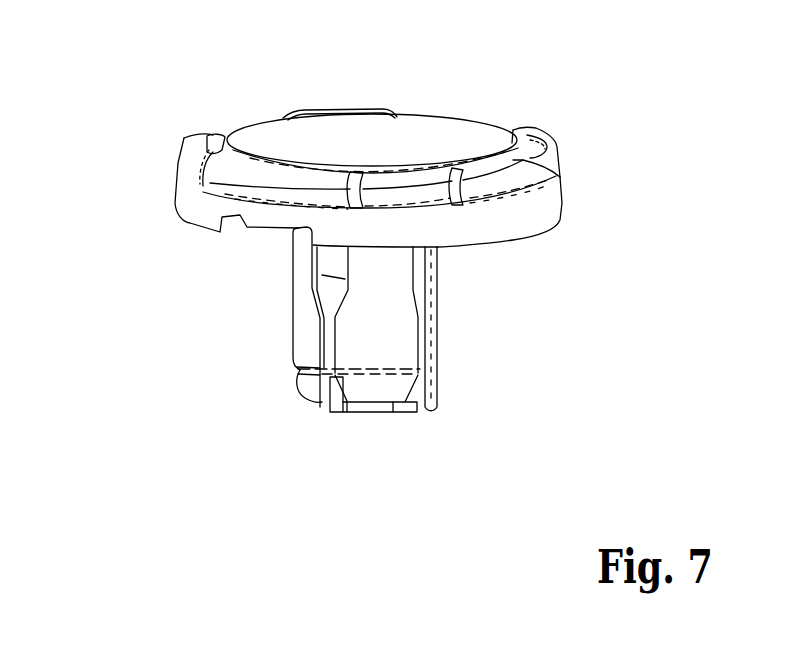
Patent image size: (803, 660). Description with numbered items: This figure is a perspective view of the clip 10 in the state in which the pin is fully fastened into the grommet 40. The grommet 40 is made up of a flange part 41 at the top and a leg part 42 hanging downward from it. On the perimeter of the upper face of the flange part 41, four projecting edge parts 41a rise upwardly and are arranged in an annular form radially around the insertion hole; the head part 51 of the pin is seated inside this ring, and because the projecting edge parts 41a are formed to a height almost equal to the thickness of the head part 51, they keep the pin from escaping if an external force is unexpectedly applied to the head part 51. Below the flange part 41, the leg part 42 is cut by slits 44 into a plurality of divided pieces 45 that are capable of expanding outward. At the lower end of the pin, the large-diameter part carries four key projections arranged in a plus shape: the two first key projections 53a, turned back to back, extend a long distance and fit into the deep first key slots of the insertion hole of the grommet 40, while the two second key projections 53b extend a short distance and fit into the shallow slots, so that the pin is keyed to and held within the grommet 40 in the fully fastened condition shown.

The clip 10 is at (256, 78).
The grommet 40 is at (677, 227).
The flange part 41 is at (548, 215).
The projecting edge parts 41a is at (222, 143).
The leg part 42 is at (567, 320).
The slits 44 is at (300, 363).
The divided pieces 45 is at (368, 337).
The head part 51 is at (442, 127).
The first key projections 53a is at (328, 413).
The second key projections 53b is at (417, 417).